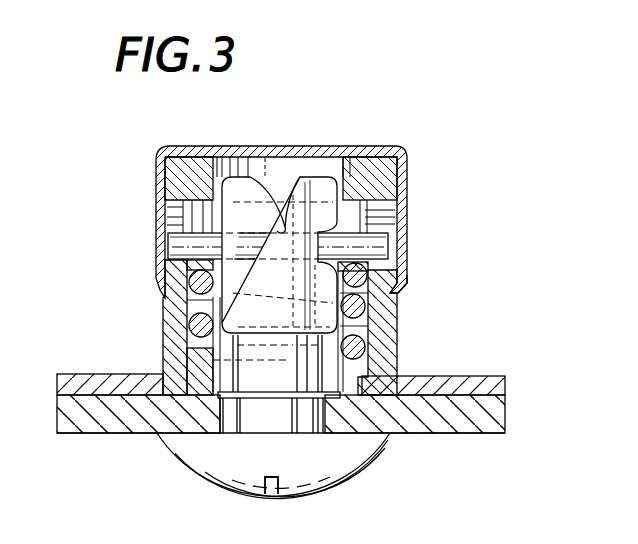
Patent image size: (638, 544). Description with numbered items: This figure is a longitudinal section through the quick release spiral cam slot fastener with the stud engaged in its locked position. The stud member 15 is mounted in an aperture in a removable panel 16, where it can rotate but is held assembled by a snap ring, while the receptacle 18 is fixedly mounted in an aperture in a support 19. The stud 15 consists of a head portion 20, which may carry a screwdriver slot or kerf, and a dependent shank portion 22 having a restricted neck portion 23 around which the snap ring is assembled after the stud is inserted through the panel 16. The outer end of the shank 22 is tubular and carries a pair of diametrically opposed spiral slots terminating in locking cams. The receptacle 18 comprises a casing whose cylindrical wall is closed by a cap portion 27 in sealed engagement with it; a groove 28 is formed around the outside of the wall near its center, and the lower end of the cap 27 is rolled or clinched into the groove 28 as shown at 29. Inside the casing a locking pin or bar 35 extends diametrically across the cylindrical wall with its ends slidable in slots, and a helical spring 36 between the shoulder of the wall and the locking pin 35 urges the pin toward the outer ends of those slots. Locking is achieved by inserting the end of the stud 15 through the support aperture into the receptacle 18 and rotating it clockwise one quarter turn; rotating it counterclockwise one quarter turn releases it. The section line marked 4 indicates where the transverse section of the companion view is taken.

The section line 4- 4 is at (283, 140).
The stud member 15 is at (263, 475).
The panel 16 is at (467, 433).
The receptacle 18 is at (290, 275).
The support 19 is at (443, 380).
The head portion 20 is at (326, 487).
The shank portion 22 is at (250, 298).
The restricted neck portion 23 is at (285, 384).
The cap portion 27 is at (401, 154).
The groove 28 is at (391, 296).
The rolled or clinched portion 29 is at (409, 279).
The locking pin or bar 35 is at (178, 241).
The helical spring 36 is at (199, 326).